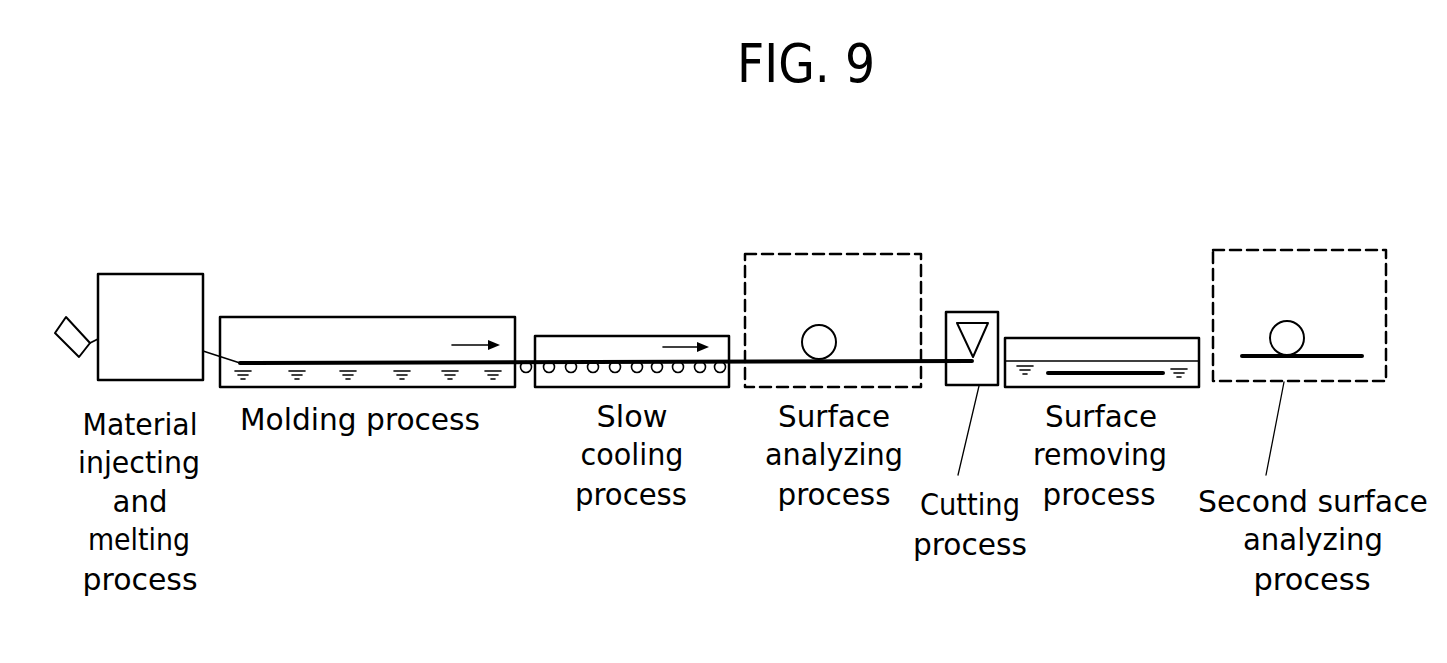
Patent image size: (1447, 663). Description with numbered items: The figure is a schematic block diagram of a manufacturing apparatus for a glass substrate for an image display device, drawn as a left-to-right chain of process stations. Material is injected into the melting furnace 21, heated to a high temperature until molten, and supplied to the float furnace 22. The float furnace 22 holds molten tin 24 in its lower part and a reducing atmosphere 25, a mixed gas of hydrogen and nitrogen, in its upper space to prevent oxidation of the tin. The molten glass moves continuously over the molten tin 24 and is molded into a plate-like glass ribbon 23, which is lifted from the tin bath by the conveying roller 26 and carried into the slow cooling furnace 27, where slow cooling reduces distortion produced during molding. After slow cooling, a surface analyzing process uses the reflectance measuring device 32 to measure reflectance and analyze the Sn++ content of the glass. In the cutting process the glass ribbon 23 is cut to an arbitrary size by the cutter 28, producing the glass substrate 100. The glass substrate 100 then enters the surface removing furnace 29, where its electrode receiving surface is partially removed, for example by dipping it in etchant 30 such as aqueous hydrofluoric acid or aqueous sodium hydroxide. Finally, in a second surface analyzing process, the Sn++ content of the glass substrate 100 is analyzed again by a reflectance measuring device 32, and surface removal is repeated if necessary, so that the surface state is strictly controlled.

The melting furnace 21 is at (144, 274).
The float furnace 22 is at (272, 317).
The glass ribbon 23 is at (343, 361).
The molten tin 24 is at (430, 377).
The reducing atmosphere 25 is at (377, 327).
The conveying roller 26 is at (522, 374).
The slow cooling furnace 27 is at (625, 336).
The cutter 28 is at (967, 312).
The surface removing furnace 29 is at (1040, 338).
The etchant 30 is at (1178, 368).
The reflectance measuring device 32 is at (813, 325).
The glass substrate 100 is at (1067, 372).